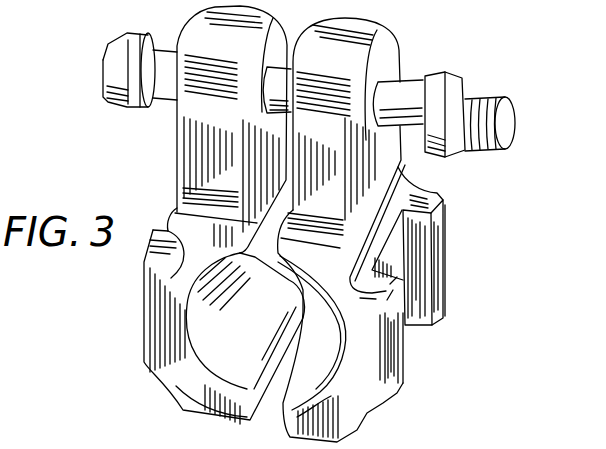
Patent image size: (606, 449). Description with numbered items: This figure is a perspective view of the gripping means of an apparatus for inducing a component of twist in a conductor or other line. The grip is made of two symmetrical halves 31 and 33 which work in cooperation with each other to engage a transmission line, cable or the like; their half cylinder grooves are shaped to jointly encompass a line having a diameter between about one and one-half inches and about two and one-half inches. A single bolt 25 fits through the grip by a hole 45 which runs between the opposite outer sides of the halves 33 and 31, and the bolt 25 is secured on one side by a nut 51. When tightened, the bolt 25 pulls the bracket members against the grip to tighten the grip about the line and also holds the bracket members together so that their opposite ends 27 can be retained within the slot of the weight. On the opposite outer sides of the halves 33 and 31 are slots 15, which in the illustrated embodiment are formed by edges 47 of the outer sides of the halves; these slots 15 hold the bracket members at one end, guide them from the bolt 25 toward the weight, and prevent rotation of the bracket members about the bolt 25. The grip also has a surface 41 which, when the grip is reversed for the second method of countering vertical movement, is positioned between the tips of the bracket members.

The slots 15 is at (417, 275).
The bolt 25 is at (497, 101).
The opposite ends 27 is at (116, 53).
The symmetrical half 31 is at (148, 332).
The symmetrical half 33 is at (403, 391).
The surface 41 is at (290, 433).
The hole 45 is at (291, 78).
The edges 47 is at (437, 230).
The nut 51 is at (457, 78).